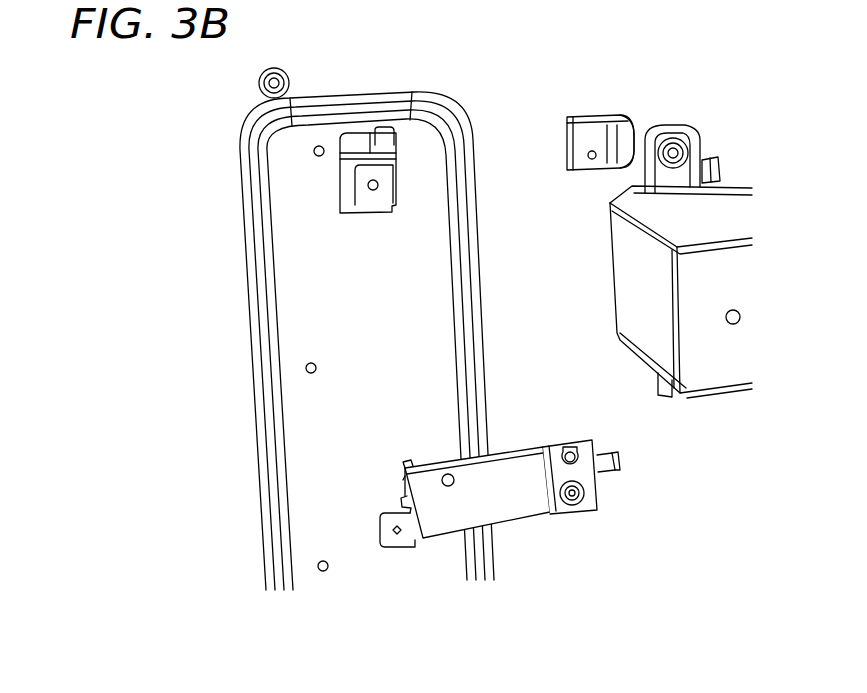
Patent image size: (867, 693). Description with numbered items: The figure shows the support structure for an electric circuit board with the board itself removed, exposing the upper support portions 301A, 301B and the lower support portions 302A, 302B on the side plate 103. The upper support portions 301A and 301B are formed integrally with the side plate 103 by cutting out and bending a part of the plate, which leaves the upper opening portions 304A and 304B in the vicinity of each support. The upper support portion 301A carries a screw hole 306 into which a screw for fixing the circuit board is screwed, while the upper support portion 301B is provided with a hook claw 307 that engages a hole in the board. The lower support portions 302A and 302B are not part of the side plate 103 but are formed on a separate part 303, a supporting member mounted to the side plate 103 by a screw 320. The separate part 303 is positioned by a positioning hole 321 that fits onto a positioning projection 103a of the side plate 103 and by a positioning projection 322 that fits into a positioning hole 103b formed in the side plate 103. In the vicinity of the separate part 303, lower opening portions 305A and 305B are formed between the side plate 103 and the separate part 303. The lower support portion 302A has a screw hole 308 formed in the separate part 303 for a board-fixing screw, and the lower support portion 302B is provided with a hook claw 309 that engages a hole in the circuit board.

The side plate 103 is at (546, 289).
The positioning projection 103a is at (567, 452).
The positioning hole 103b is at (403, 477).
The upper support portion 301A is at (360, 168).
The upper support portion 301B is at (593, 145).
The lower support portion 302A is at (390, 545).
The lower support portion 302B is at (603, 477).
The separate part 303 is at (517, 510).
The upper opening portion 304A is at (377, 138).
The upper opening portion 304B is at (622, 132).
The lower opening portion 305A is at (403, 497).
The lower opening portion 305B is at (417, 467).
The screw hole 306 is at (374, 192).
The hook claw 307 is at (597, 158).
The screw hole 308 is at (400, 532).
The hook claw 309 is at (614, 458).
The screw 320 is at (572, 508).
The positioning hole 321 is at (578, 448).
The positioning projection 322 is at (405, 468).